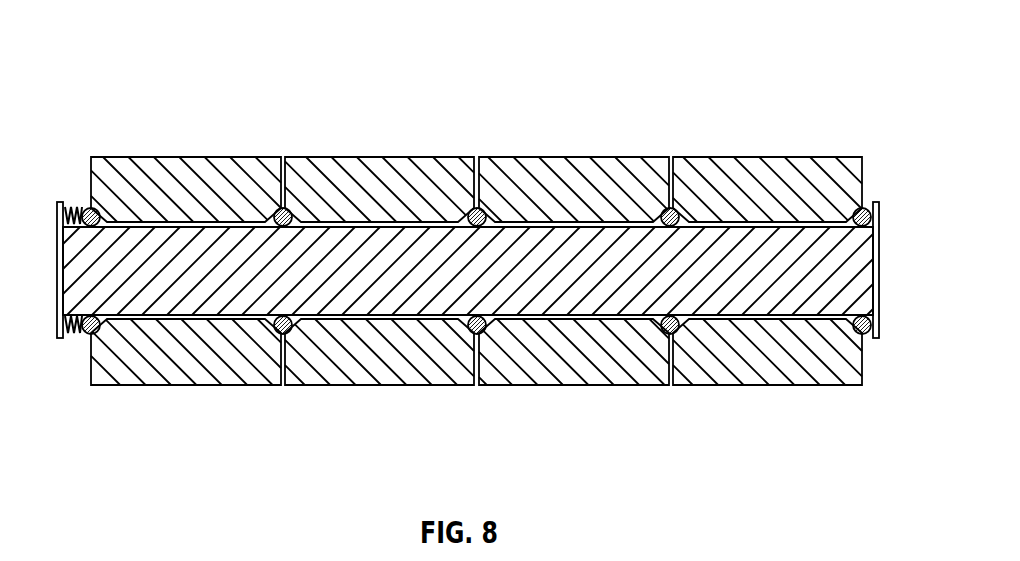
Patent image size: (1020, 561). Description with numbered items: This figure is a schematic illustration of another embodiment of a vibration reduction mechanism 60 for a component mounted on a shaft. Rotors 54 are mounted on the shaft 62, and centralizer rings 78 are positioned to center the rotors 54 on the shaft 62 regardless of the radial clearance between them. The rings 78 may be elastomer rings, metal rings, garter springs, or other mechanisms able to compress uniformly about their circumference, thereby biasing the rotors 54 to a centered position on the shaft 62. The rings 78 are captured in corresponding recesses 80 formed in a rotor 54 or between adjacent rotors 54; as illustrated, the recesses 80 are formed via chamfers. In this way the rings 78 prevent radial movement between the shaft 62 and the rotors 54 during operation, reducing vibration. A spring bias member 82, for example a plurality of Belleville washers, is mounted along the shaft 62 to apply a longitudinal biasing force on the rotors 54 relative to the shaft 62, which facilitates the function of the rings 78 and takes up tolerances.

The rotor 54 is at (322, 358).
The vibration reduction mechanism 60 is at (489, 245).
The shaft 62 is at (757, 270).
The centralizer rings 78 is at (476, 209).
The recesses 80 is at (282, 316).
The spring bias member 82 is at (71, 195).